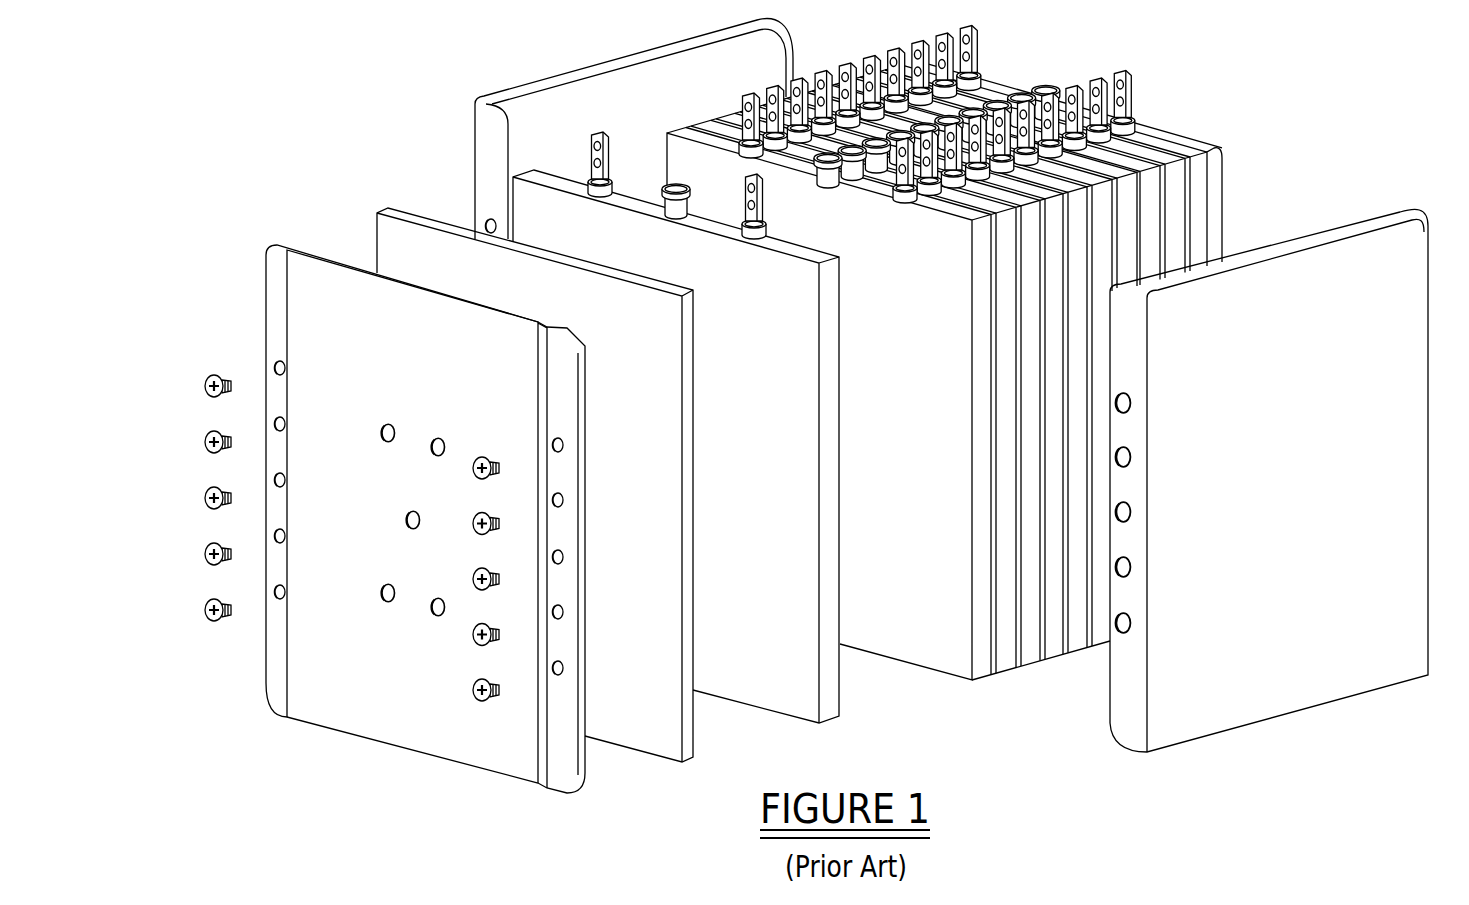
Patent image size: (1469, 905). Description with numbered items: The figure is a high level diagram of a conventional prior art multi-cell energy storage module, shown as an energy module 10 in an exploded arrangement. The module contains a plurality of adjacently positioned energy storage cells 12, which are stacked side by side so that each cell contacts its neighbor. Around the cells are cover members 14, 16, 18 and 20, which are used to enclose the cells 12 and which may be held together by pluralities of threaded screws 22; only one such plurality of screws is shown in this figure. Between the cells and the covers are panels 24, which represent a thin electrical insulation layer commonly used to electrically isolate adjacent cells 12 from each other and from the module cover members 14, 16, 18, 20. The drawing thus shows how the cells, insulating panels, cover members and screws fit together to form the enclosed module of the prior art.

The energy module 10 is at (784, 406).
The energy storage cells 12 is at (555, 180).
The cover member 14 is at (488, 153).
The cover member 16 is at (1292, 660).
The cover member 18 is at (387, 715).
The cover member 20 is at (1145, 125).
The threaded screws 22 is at (185, 378).
The panels 24 is at (398, 242).